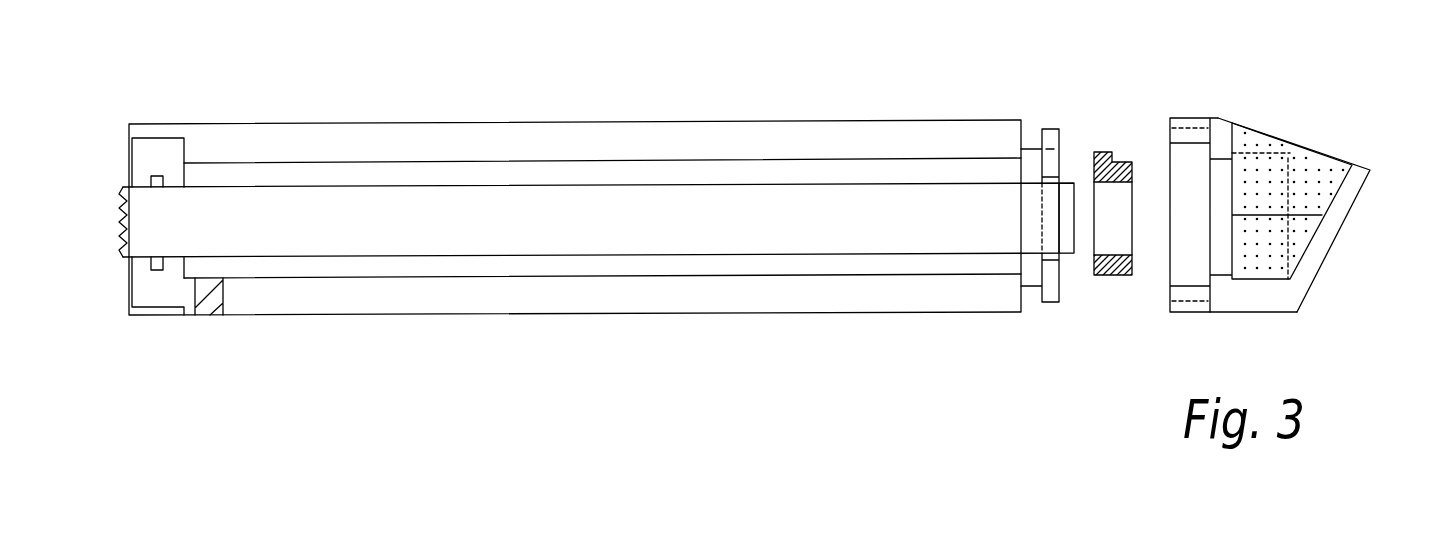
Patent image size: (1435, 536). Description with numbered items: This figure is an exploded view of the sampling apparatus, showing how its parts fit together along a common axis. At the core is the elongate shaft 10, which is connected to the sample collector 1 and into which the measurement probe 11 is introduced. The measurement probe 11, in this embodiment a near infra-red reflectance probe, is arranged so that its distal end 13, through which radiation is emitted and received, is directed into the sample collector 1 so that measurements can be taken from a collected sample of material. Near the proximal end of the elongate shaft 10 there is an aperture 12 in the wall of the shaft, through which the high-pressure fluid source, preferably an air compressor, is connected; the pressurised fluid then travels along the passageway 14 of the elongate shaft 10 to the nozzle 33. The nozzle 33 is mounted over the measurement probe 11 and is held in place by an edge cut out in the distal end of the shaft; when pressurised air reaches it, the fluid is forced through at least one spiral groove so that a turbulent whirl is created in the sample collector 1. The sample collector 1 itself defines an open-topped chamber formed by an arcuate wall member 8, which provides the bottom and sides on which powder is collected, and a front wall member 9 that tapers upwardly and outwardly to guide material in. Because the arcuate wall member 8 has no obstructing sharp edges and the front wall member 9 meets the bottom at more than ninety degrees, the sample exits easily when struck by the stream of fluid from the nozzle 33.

The sample collector 1 is at (1329, 115).
The arcuate wall member 8 is at (1265, 297).
The front wall member 9 is at (1340, 213).
The elongate shaft 10 is at (355, 138).
The measurement probe 11 is at (480, 178).
The aperture 12 is at (208, 305).
The distal end 13 is at (1080, 183).
The passageway 14 is at (637, 168).
The nozzle 33 is at (1127, 162).